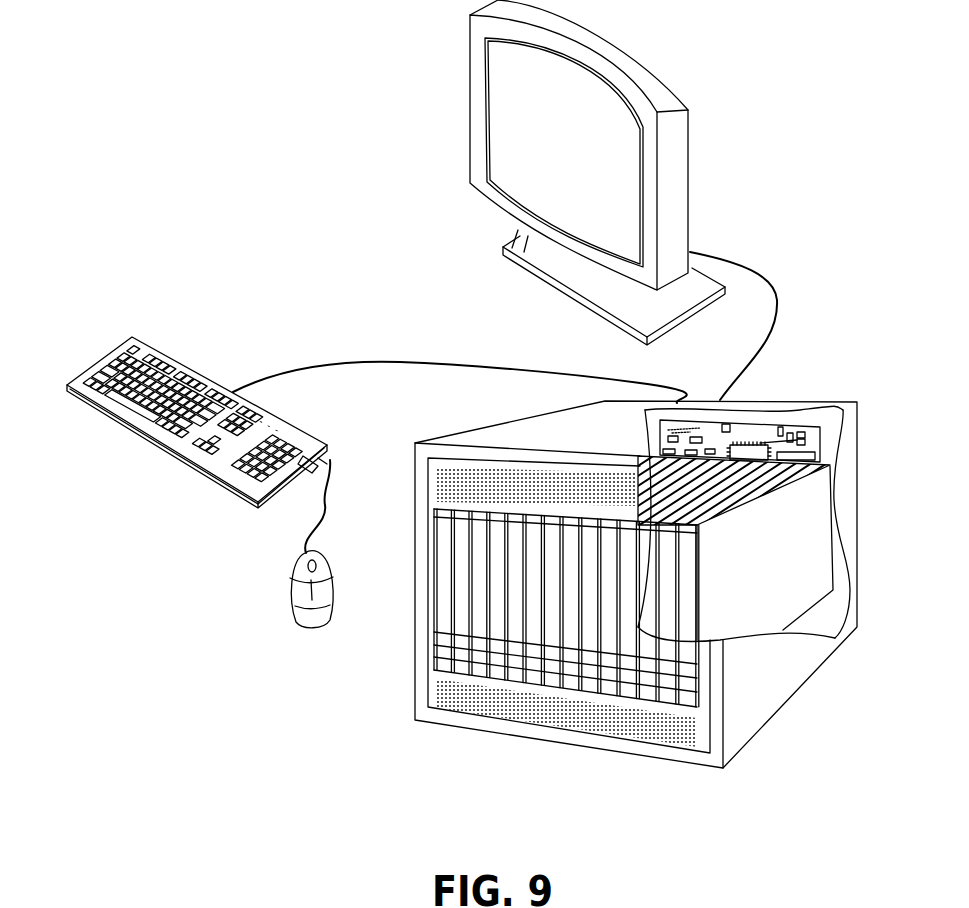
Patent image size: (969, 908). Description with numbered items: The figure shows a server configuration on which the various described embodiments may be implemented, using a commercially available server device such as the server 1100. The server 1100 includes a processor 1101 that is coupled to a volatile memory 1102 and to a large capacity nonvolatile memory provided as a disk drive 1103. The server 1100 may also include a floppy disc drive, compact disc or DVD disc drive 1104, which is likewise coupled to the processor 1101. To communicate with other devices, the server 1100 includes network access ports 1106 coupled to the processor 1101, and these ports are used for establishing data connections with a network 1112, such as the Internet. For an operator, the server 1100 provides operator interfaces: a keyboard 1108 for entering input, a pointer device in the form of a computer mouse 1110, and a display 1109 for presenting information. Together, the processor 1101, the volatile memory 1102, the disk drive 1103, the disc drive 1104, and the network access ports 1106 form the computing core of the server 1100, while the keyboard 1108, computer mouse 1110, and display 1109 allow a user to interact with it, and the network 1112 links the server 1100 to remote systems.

The server 1100 is at (500, 428).
The processor 1101 is at (663, 452).
The volatile memory 1102 is at (825, 432).
The disk drive 1103 is at (480, 555).
The disc drive 1104 is at (442, 610).
The network access ports 1106 is at (757, 428).
The keyboard 1108 is at (193, 370).
The display 1109 is at (690, 197).
The computer mouse 1110 is at (298, 618).
The network 1112 is at (760, 443).